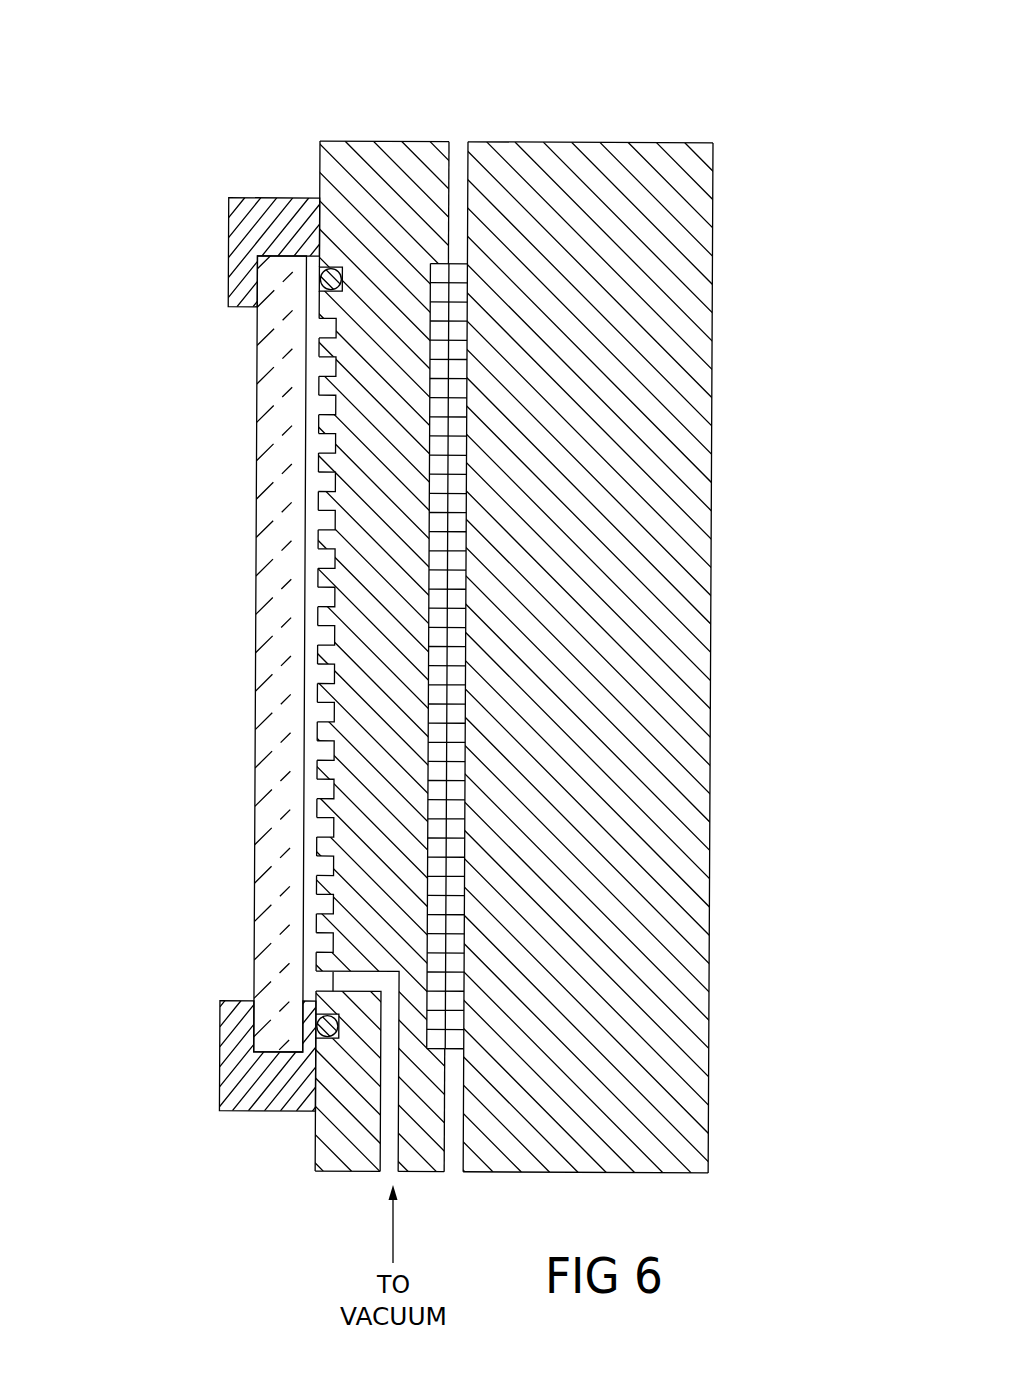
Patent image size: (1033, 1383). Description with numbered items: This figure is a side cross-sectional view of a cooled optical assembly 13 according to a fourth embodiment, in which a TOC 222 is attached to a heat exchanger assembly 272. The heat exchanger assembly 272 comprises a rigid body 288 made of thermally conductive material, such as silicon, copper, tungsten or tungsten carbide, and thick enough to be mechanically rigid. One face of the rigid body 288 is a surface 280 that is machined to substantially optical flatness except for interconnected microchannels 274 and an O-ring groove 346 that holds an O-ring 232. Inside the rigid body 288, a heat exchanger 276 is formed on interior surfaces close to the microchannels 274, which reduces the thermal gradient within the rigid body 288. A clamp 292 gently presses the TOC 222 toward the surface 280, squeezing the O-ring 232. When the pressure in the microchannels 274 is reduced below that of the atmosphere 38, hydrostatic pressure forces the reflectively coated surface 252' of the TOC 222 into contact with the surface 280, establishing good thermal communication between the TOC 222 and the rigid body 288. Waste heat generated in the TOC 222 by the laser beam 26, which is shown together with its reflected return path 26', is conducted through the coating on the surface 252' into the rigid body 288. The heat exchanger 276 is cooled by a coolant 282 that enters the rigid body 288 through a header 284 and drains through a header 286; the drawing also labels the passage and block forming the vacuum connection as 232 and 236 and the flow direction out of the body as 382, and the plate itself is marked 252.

The cooled optical assembly 13 is at (614, 115).
The laser beam 26 is at (122, 553).
The return gas flow direction 26' is at (121, 778).
The atmosphere 38 is at (172, 190).
The TOC 222 is at (259, 378).
The O-ring 232 is at (318, 1015).
The passage wall block 236 is at (385, 1143).
The substrate support plate 252 is at (213, 648).
The surface 252' is at (245, 444).
The heat exchanger assembly 272 is at (718, 190).
The microchannels 274 is at (320, 830).
The heat exchanger 276 is at (428, 485).
The surface 280 is at (320, 163).
The coolant 282 is at (460, 125).
The header 284 is at (464, 1074).
The header 286 is at (469, 168).
The rigid body 288 is at (703, 657).
The clamp 292 is at (224, 1050).
The O-ring groove 346 is at (329, 1040).
The fluid return flow 382 is at (453, 1185).